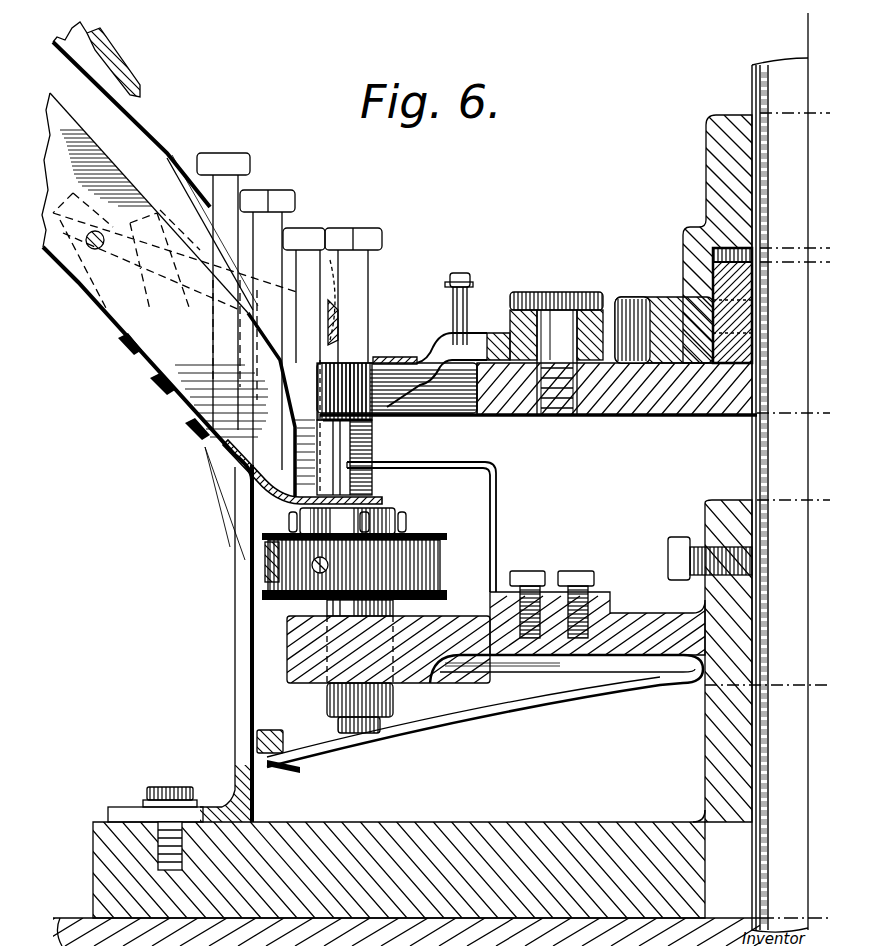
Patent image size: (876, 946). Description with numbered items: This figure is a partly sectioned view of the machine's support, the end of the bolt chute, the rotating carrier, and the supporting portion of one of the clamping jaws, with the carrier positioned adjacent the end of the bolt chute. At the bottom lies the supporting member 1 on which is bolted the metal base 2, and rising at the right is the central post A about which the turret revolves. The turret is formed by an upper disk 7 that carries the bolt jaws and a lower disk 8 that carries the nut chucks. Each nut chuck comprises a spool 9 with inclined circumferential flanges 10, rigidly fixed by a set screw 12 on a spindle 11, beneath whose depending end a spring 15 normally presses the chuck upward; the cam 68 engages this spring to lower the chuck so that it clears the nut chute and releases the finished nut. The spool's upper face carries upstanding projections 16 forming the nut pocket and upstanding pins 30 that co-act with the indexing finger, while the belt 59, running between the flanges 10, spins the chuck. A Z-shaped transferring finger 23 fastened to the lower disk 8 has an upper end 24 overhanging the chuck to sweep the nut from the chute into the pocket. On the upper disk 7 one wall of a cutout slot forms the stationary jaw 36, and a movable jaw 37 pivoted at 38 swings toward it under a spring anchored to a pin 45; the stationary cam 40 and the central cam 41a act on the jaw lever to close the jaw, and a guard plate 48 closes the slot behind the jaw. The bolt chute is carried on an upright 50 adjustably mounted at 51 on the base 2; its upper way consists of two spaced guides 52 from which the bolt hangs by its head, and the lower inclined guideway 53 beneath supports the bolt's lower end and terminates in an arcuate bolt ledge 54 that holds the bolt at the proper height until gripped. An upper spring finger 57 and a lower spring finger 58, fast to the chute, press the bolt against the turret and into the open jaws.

The supporting member 1 is at (440, 945).
The metal base 2 is at (456, 841).
The column post A is at (779, 82).
The cam 40 is at (703, 227).
The central cam 41a is at (648, 283).
The upper disk 7 is at (670, 403).
The stationary jaw 36 is at (575, 415).
The movable jaw 37 is at (457, 393).
The pivotal point 38 is at (553, 300).
The pin 45 is at (468, 274).
The guard plate 48 is at (413, 338).
The upper finger 57 is at (330, 305).
The lower finger 58 is at (347, 445).
The bolt ledge 54 is at (377, 493).
The upper end 24 is at (463, 480).
The inclined circumferential flanges 10 is at (440, 590).
The upstanding pins 30 is at (407, 520).
The spool 9 is at (407, 567).
The belt 59 is at (273, 580).
The set screw 12 is at (283, 603).
The spindle 11 is at (339, 705).
The lower disk 8 is at (630, 624).
The Z-shaped transferring finger 23 is at (540, 585).
The spring 15 is at (447, 720).
The cam 68 is at (267, 733).
The upright 50 is at (240, 657).
The adjustable mounting 51 is at (153, 817).
The lower inclined guideway 53 is at (97, 173).
The spaced guides 52 is at (148, 110).
The upstanding projections 16 is at (300, 518).